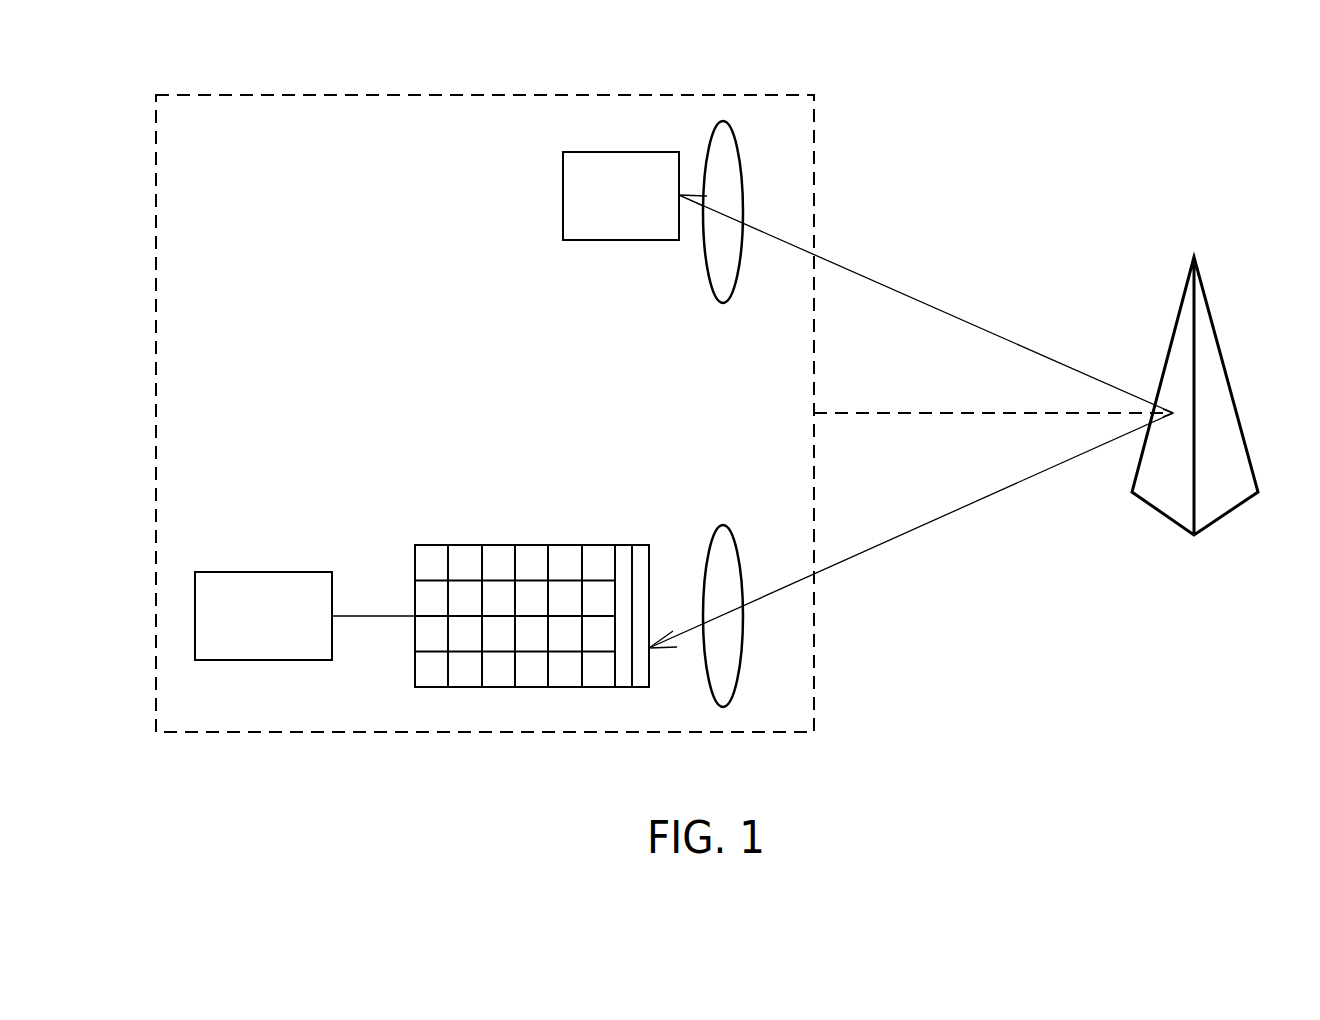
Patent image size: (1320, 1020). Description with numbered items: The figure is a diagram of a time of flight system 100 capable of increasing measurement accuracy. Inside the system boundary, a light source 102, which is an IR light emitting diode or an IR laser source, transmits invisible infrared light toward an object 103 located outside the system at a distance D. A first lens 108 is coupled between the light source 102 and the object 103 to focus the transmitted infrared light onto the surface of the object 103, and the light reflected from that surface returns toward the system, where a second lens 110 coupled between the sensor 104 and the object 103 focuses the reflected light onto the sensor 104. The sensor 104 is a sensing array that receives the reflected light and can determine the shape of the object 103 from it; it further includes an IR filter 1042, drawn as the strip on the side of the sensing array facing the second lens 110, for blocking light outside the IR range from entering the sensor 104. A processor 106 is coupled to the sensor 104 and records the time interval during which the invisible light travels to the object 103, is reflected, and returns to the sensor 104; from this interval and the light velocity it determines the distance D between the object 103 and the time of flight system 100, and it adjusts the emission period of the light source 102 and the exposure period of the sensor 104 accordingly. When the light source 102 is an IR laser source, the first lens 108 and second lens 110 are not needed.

The time of flight system 100 is at (497, 94).
The light source 102 is at (562, 197).
The object 103 is at (1226, 373).
The sensor 104 is at (501, 544).
The IR filter 1042 is at (636, 545).
The processor 106 is at (273, 571).
The first lens 108 is at (721, 304).
The second lens 110 is at (722, 524).
The distance D is at (993, 399).